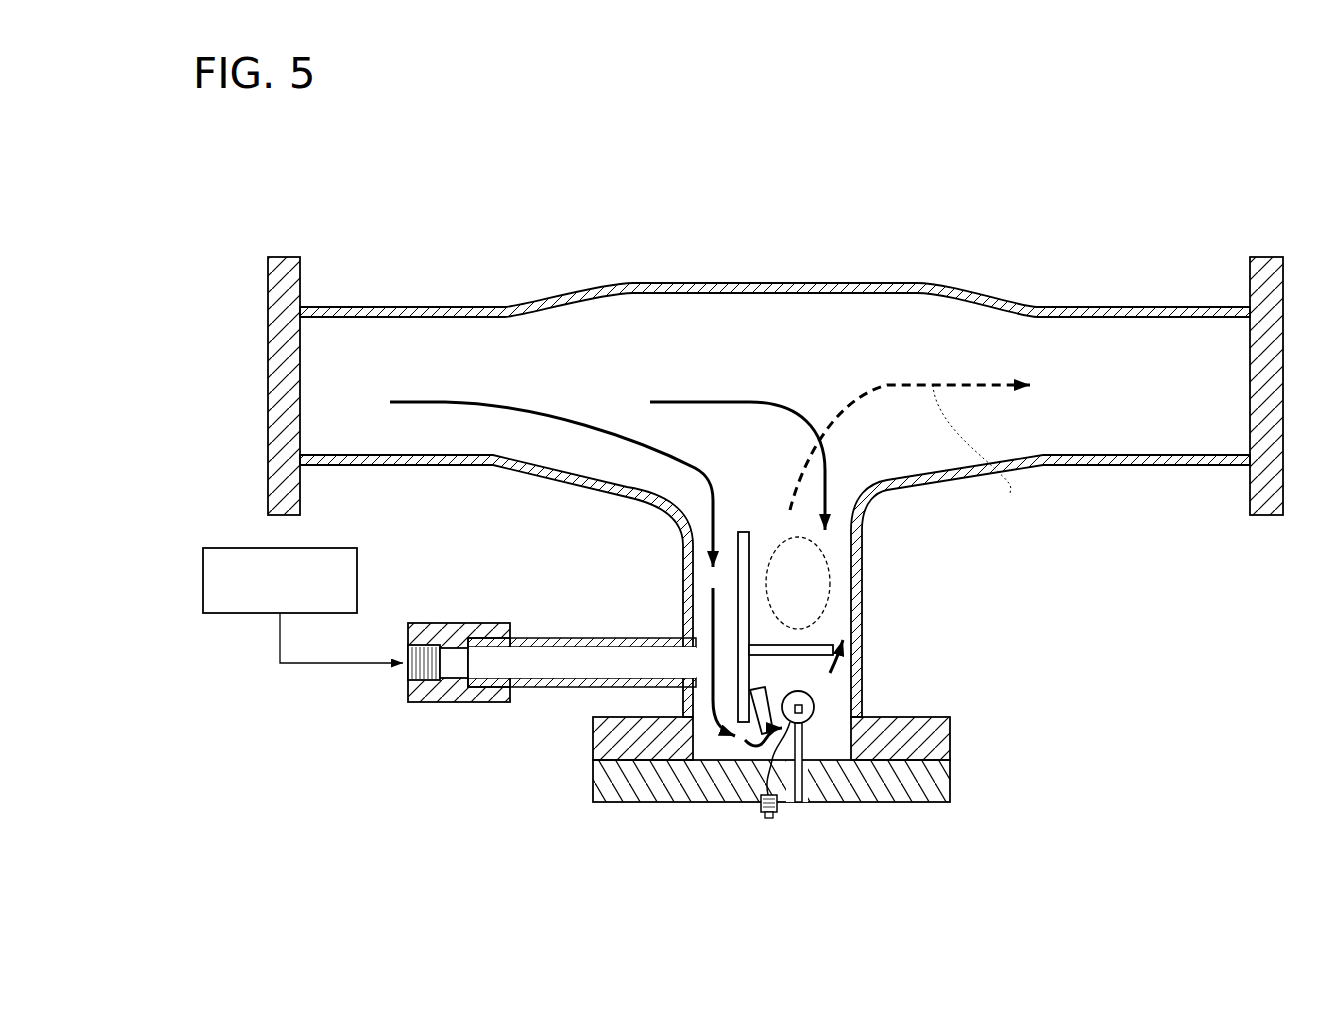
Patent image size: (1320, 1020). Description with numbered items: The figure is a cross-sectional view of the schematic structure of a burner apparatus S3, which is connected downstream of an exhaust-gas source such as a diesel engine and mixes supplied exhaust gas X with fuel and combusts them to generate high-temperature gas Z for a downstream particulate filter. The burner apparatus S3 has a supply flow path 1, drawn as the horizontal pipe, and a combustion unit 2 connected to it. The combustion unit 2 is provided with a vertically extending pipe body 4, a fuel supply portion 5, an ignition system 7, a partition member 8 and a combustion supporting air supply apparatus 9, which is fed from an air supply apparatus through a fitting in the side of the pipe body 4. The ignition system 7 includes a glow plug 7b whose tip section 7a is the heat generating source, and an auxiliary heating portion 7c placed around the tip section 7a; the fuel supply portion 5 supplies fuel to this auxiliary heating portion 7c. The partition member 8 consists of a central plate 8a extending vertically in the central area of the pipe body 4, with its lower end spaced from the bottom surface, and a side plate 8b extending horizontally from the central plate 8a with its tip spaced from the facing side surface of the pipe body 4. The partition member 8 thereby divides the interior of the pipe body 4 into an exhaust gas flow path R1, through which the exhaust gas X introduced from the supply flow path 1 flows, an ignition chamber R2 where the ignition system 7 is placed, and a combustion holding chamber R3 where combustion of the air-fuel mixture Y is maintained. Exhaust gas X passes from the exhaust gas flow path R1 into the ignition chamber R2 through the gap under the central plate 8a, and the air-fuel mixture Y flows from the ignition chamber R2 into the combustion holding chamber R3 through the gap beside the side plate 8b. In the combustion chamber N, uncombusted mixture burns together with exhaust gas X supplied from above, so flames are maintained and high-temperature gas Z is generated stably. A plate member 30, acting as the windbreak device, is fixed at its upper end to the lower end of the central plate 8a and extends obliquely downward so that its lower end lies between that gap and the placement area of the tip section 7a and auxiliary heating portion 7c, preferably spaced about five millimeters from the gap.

The supply flow path 1 is at (447, 307).
The combustion unit 2 is at (1023, 623).
The pipe body 4 is at (862, 671).
The fuel supply portion 5 is at (766, 816).
The ignition system 7 is at (840, 796).
The tip section 7a is at (803, 710).
The glow plug 7b is at (812, 796).
The auxiliary heating portion 7c is at (807, 722).
The partition member 8 is at (820, 574).
The central plate 8a is at (740, 532).
The side plate 8b is at (820, 644).
The combustion supporting air supply apparatus 9 is at (420, 708).
The plate member 30 is at (770, 700).
The exhaust gas X is at (442, 404).
The air-fuel mixture Y is at (845, 667).
The high-temperature gas Z is at (910, 457).
The combustion chamber N is at (827, 557).
The exhaust gas flow path R1 is at (728, 652).
The ignition chamber R2 is at (832, 728).
The combustion holding chamber R3 is at (837, 600).
The burner apparatus S3 is at (1172, 278).